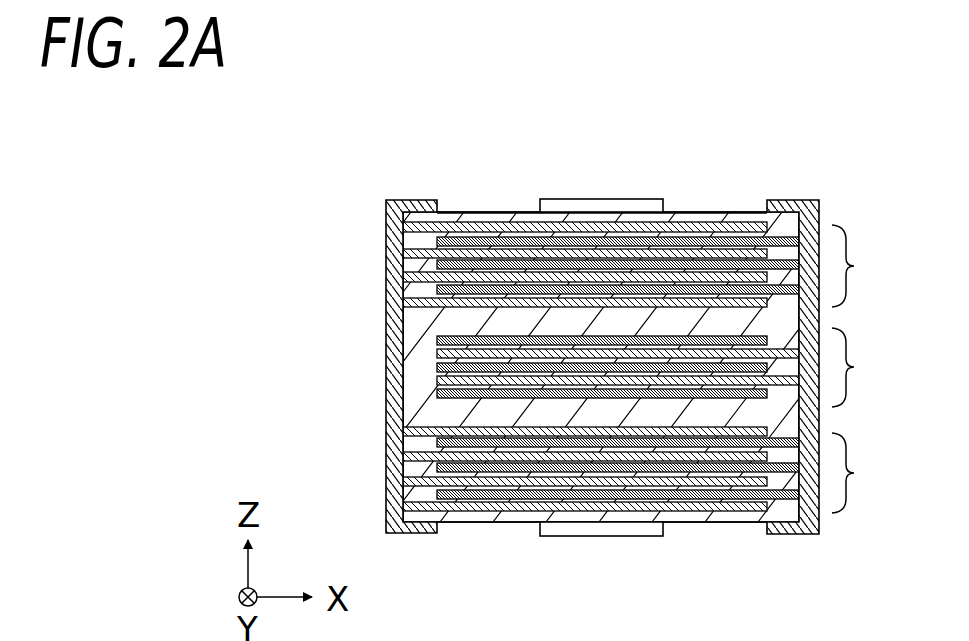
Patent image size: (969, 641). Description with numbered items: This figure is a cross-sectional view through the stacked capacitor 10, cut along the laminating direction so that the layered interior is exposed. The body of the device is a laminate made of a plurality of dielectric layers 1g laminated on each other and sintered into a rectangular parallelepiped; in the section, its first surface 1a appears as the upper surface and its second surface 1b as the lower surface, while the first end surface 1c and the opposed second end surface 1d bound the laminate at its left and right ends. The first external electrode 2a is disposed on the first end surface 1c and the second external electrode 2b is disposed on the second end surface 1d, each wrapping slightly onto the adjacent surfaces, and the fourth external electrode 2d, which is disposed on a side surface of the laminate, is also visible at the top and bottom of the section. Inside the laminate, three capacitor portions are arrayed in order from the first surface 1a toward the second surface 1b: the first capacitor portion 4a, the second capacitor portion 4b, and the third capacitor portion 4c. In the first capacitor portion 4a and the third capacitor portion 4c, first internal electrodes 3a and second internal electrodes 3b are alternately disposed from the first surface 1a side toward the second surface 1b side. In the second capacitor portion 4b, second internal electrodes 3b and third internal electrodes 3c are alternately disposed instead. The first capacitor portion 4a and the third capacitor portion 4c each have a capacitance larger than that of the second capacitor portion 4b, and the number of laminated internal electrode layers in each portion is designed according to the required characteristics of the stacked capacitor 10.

The stacked capacitor 10 is at (656, 73).
The first surface 1a is at (672, 218).
The second surface 1b is at (740, 525).
The first end surface 1c is at (400, 296).
The second end surface 1d is at (812, 418).
The dielectric layers 1g is at (487, 213).
The first external electrode 2a is at (413, 201).
The second external electrode 2b is at (818, 200).
The fourth external electrode 2d is at (585, 208).
The first internal electrodes 3a is at (405, 226).
The second internal electrodes 3b is at (710, 217).
The third internal electrodes 3c is at (437, 364).
The first capacitor portion 4a is at (868, 266).
The second capacitor portion 4b is at (869, 367).
The third capacitor portion 4c is at (867, 473).